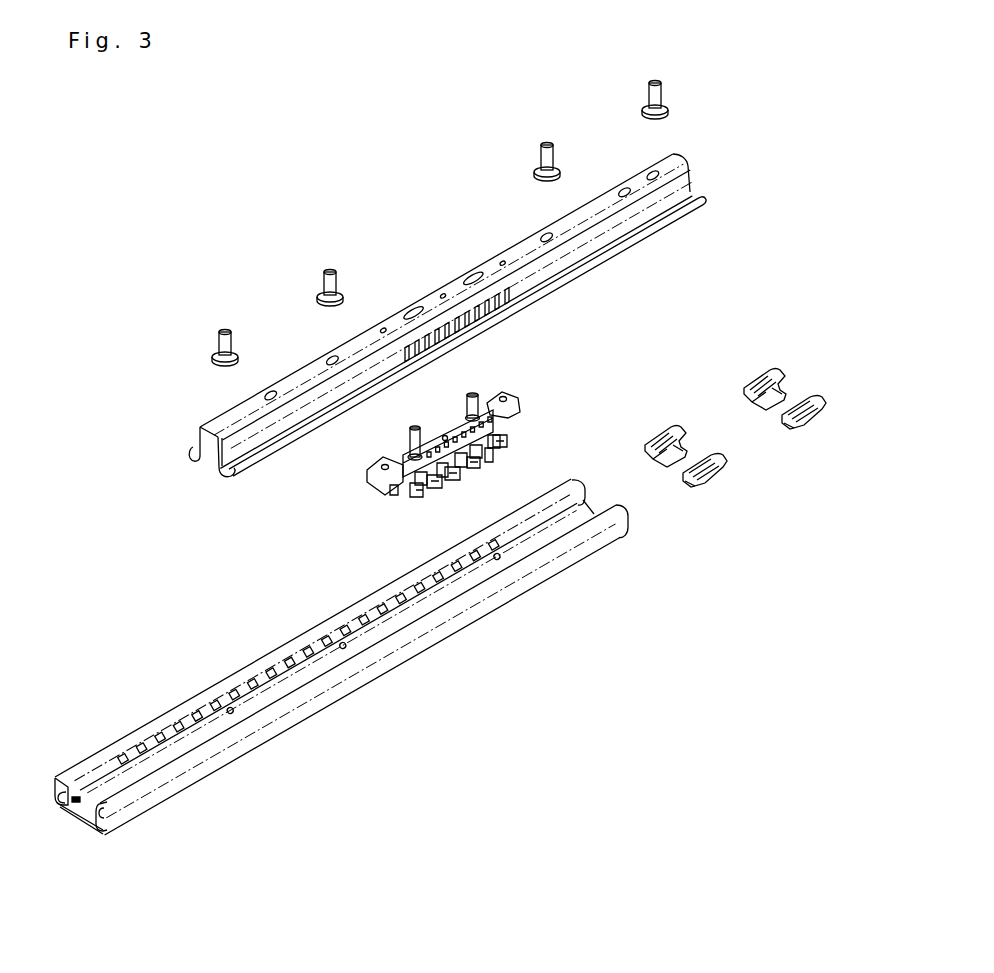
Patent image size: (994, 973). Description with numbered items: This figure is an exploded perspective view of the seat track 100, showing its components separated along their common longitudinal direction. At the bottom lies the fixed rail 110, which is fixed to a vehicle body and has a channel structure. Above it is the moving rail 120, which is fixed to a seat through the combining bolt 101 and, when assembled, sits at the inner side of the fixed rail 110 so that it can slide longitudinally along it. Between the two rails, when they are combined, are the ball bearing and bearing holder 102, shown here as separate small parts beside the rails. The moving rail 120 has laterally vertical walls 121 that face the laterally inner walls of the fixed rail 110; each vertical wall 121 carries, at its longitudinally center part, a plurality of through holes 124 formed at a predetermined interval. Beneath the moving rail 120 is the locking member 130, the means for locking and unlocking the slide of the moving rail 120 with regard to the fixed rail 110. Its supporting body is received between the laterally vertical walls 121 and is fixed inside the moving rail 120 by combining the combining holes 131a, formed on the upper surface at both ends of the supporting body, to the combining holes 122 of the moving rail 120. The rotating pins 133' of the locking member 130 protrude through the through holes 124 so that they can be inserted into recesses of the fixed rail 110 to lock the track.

The seat track 100 is at (234, 117).
The combining bolt 101 is at (218, 341).
The ball bearing and bearing holder 102 is at (714, 483).
The fixed rail 110 is at (543, 603).
The moving rail 120 is at (702, 173).
The laterally vertical walls 121 is at (213, 468).
The combining holes 122 is at (384, 327).
The through holes 124 is at (503, 289).
The locking member 130 is at (523, 389).
The combining holes 131a is at (375, 465).
The rotating pins 133' is at (414, 511).